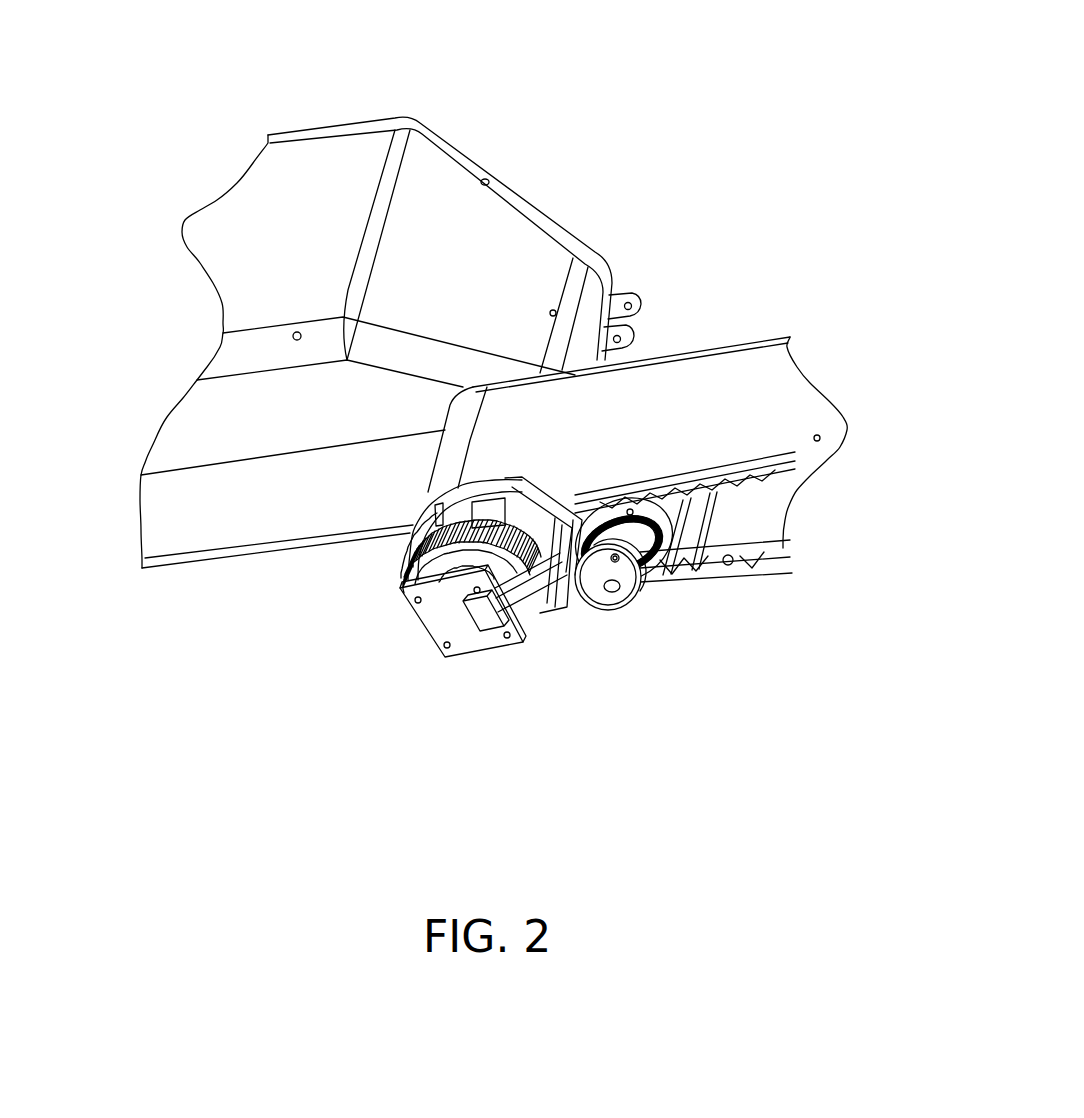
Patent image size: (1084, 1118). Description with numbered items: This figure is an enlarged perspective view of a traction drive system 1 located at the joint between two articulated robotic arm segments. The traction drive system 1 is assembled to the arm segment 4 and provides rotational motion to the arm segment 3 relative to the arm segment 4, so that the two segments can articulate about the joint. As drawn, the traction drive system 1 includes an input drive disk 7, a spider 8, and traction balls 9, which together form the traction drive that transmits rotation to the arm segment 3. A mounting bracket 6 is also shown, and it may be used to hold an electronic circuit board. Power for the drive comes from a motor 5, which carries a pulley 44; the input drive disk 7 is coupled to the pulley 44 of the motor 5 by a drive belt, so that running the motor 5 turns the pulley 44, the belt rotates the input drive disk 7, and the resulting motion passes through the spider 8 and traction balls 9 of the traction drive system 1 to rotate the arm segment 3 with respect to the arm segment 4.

The traction drive system 1 is at (493, 612).
The arm segment 3 is at (453, 197).
The arm segment 4 is at (772, 425).
The motor 5 is at (660, 517).
The mounting bracket 6 is at (568, 612).
The input drive disk 7 is at (408, 555).
The spider 8 is at (515, 508).
The traction balls 9 is at (455, 510).
The pulley 44 is at (645, 560).